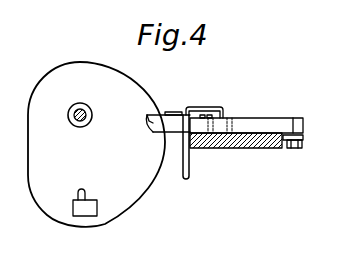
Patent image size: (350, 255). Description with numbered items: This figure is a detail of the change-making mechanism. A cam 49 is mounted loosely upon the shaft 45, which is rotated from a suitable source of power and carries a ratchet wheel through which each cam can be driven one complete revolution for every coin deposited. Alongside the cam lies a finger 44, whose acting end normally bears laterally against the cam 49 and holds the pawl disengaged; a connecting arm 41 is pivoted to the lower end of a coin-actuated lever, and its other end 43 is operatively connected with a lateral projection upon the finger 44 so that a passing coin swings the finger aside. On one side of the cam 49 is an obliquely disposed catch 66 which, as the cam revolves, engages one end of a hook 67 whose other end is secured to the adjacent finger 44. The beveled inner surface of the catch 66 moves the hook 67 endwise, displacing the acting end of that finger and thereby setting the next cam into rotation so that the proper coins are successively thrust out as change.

The connecting arm 41 is at (187, 167).
The other end of the connecting arm 43 is at (212, 109).
The finger 44 is at (263, 123).
The shaft 45 is at (78, 124).
The cam 49 is at (47, 214).
The catch 66 is at (93, 211).
The hook 67 is at (173, 112).